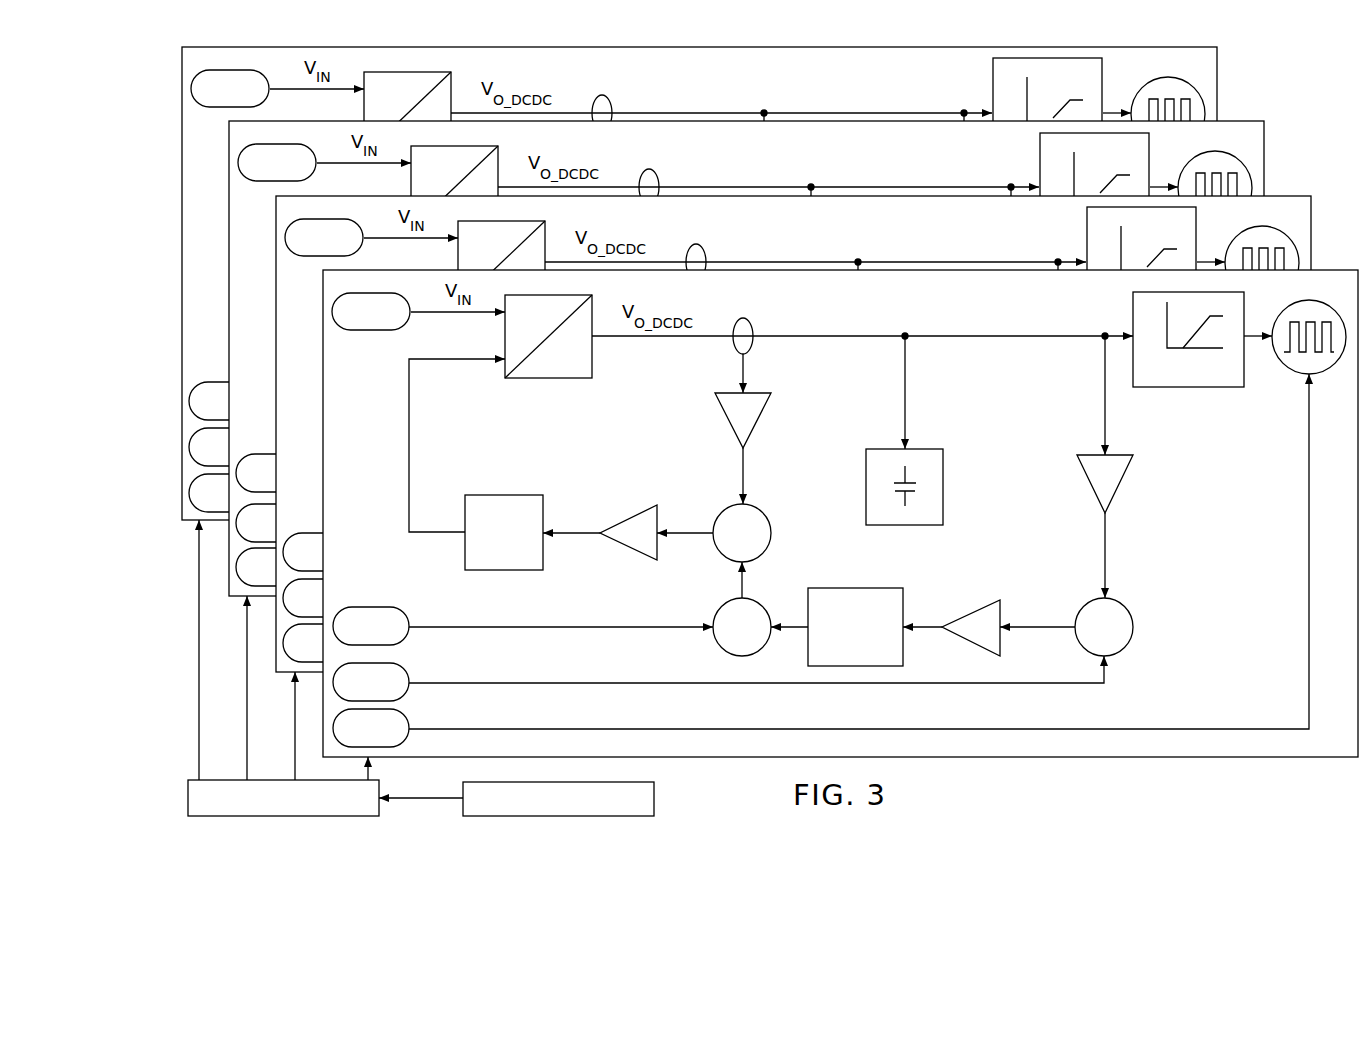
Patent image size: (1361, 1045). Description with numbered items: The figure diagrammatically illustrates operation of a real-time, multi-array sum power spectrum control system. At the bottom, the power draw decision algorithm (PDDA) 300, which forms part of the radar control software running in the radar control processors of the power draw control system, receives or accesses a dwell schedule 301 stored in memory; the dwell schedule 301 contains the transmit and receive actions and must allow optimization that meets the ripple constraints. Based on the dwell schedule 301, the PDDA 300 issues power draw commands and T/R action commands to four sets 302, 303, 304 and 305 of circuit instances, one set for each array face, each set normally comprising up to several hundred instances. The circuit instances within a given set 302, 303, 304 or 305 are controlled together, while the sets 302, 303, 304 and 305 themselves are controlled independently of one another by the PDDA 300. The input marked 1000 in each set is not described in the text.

The power draw decision algorithm (PDDA) 300 is at (381, 787).
The dwell schedule 301 is at (656, 803).
The first set of circuit instances 302 is at (692, 96).
The second set of circuit instances 303 is at (739, 170).
The third set of circuit instances 304 is at (786, 245).
The fourth set of circuit instances 305 is at (833, 319).
The input power source 1000 is at (300, 200).